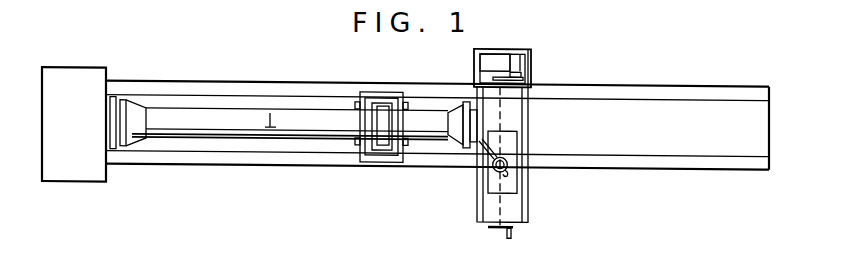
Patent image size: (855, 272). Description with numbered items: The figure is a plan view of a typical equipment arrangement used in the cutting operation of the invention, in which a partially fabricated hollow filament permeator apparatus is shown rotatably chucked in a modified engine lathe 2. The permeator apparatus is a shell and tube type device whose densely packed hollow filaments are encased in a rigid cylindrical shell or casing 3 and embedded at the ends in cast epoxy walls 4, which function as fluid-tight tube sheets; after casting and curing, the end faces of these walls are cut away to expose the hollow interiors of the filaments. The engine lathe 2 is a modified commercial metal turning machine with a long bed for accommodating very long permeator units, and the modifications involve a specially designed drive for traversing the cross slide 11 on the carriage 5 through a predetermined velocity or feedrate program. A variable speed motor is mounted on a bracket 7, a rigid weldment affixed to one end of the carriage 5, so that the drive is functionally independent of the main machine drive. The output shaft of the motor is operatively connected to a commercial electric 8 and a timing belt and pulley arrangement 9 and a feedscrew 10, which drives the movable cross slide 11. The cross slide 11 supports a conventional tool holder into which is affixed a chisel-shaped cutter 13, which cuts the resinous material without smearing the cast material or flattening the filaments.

The engine lathe 2 is at (605, 164).
The cylindrical shell or casing 3 is at (229, 108).
The cast epoxy walls 4 is at (465, 137).
The carriage 5 is at (530, 201).
The bracket 7 is at (535, 68).
The commercial electric 8 is at (513, 68).
The timing belt and pulley arrangement 9 is at (522, 79).
The feedscrew 10 is at (492, 204).
The cross slide 11 is at (517, 174).
The chisel-shaped cutter 13 is at (485, 144).